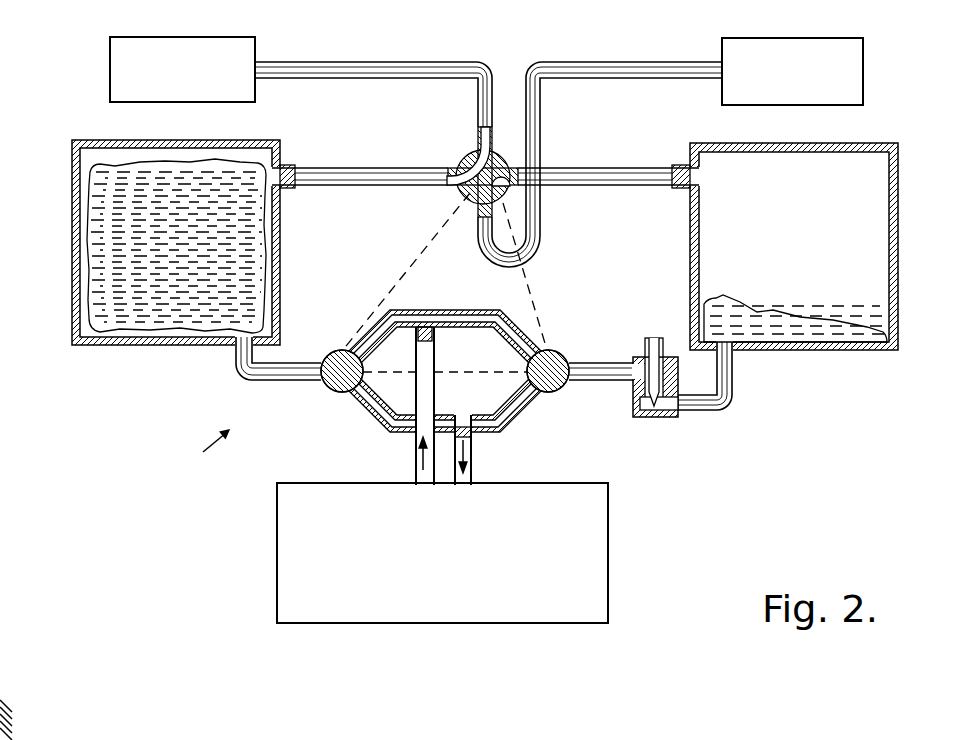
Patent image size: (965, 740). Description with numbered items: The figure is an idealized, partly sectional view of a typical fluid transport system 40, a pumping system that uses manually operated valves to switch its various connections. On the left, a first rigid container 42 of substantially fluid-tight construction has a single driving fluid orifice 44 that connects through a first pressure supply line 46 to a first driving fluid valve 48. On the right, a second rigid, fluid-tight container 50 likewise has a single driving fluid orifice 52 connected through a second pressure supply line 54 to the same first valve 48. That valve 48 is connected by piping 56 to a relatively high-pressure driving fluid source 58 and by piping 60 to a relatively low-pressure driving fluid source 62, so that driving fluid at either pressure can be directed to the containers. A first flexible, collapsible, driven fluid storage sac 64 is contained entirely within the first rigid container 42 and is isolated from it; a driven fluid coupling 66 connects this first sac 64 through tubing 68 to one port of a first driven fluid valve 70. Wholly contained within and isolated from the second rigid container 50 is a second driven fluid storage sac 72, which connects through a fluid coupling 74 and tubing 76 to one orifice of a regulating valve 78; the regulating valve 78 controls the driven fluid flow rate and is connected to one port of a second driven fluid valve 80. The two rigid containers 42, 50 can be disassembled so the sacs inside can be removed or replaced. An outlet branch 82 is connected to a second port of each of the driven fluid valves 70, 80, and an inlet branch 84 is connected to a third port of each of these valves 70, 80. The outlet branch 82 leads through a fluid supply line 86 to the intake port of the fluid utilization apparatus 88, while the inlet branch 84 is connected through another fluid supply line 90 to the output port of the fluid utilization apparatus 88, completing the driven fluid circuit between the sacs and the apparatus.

The fluid transport system 40 is at (208, 453).
The first rigid container 42 is at (72, 197).
The driving fluid orifice 44 is at (290, 165).
The first pressure supply line 46 is at (352, 167).
The first driving fluid valve 48 is at (470, 165).
The second rigid container 50 is at (898, 266).
The driving fluid orifice 52 is at (681, 166).
The second pressure supply line 54 is at (602, 167).
The piping 56 is at (407, 64).
The high-pressure driving fluid source 58 is at (245, 50).
The piping 60 is at (625, 64).
The low-pressure driving fluid source 62 is at (724, 46).
The first driven fluid storage sac 64 is at (92, 168).
The driven fluid coupling 66 is at (237, 353).
The tubing 68 is at (258, 382).
The first driven fluid valve 70 is at (336, 350).
The second driven fluid storage sac 72 is at (775, 312).
The fluid coupling 74 is at (734, 355).
The tubing 76 is at (719, 410).
The regulating valve 78 is at (636, 415).
The second driven fluid valve 80 is at (563, 352).
The outlet branch 82 is at (471, 412).
The inlet branch 84 is at (452, 310).
The fluid supply line 86 is at (474, 453).
The fluid utilization apparatus 88 is at (284, 532).
The fluid supply line 90 is at (412, 453).